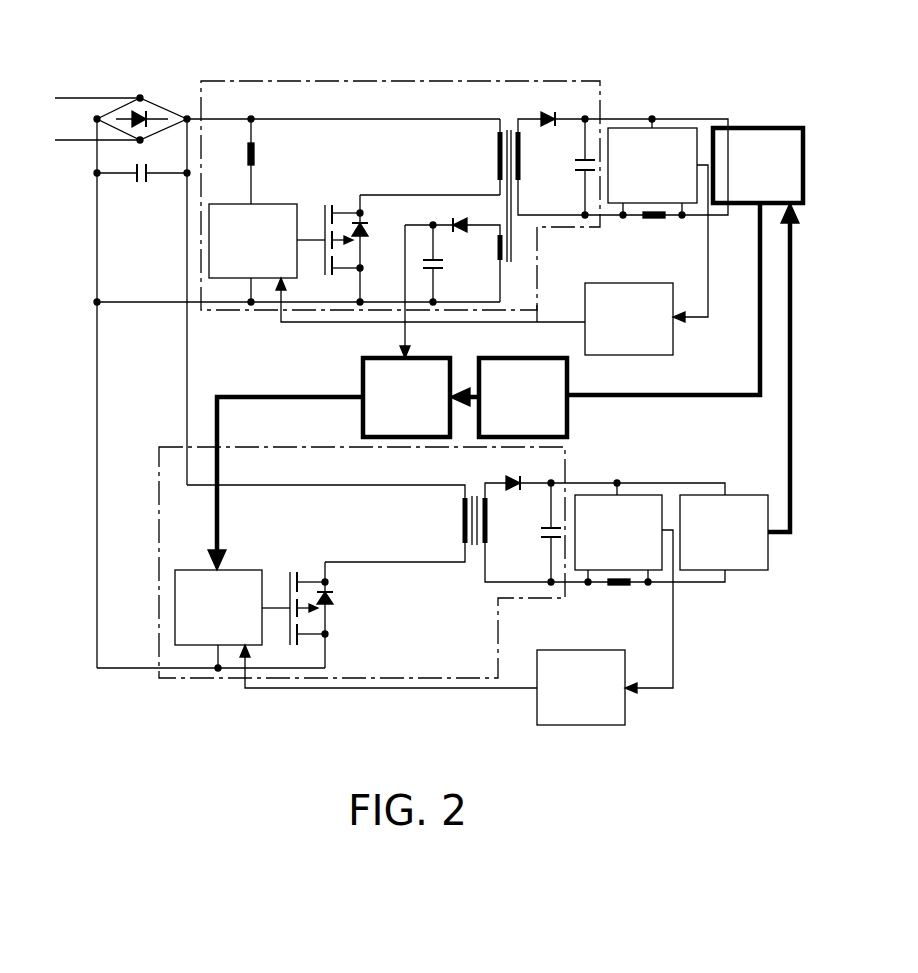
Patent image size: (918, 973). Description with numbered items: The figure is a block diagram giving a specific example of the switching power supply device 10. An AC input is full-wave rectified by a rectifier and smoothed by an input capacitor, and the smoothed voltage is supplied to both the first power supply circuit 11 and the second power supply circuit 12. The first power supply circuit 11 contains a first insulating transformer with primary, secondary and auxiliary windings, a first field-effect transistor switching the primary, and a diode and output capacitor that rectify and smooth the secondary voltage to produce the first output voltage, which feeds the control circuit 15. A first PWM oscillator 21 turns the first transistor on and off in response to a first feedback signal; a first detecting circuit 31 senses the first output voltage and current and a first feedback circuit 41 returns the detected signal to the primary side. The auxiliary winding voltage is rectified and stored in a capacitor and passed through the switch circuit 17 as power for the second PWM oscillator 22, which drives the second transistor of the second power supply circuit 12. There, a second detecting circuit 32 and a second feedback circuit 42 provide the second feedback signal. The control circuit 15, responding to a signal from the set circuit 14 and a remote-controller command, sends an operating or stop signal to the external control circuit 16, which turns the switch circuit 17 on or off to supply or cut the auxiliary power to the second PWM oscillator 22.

The switching power supply device 10 is at (317, 79).
The first power supply circuit 11 is at (424, 81).
The second power supply circuit 12 is at (193, 680).
The set circuit 14 is at (754, 495).
The control circuit 15 is at (788, 128).
The external control circuit 16 is at (570, 393).
The switch circuit 17 is at (363, 378).
The first PWM oscillator 21 is at (228, 204).
The second PWM oscillator 22 is at (188, 570).
The first detecting circuit 31 is at (683, 128).
The second detecting circuit 32 is at (648, 495).
The first feedback circuit 41 is at (599, 283).
The second feedback circuit 42 is at (551, 650).